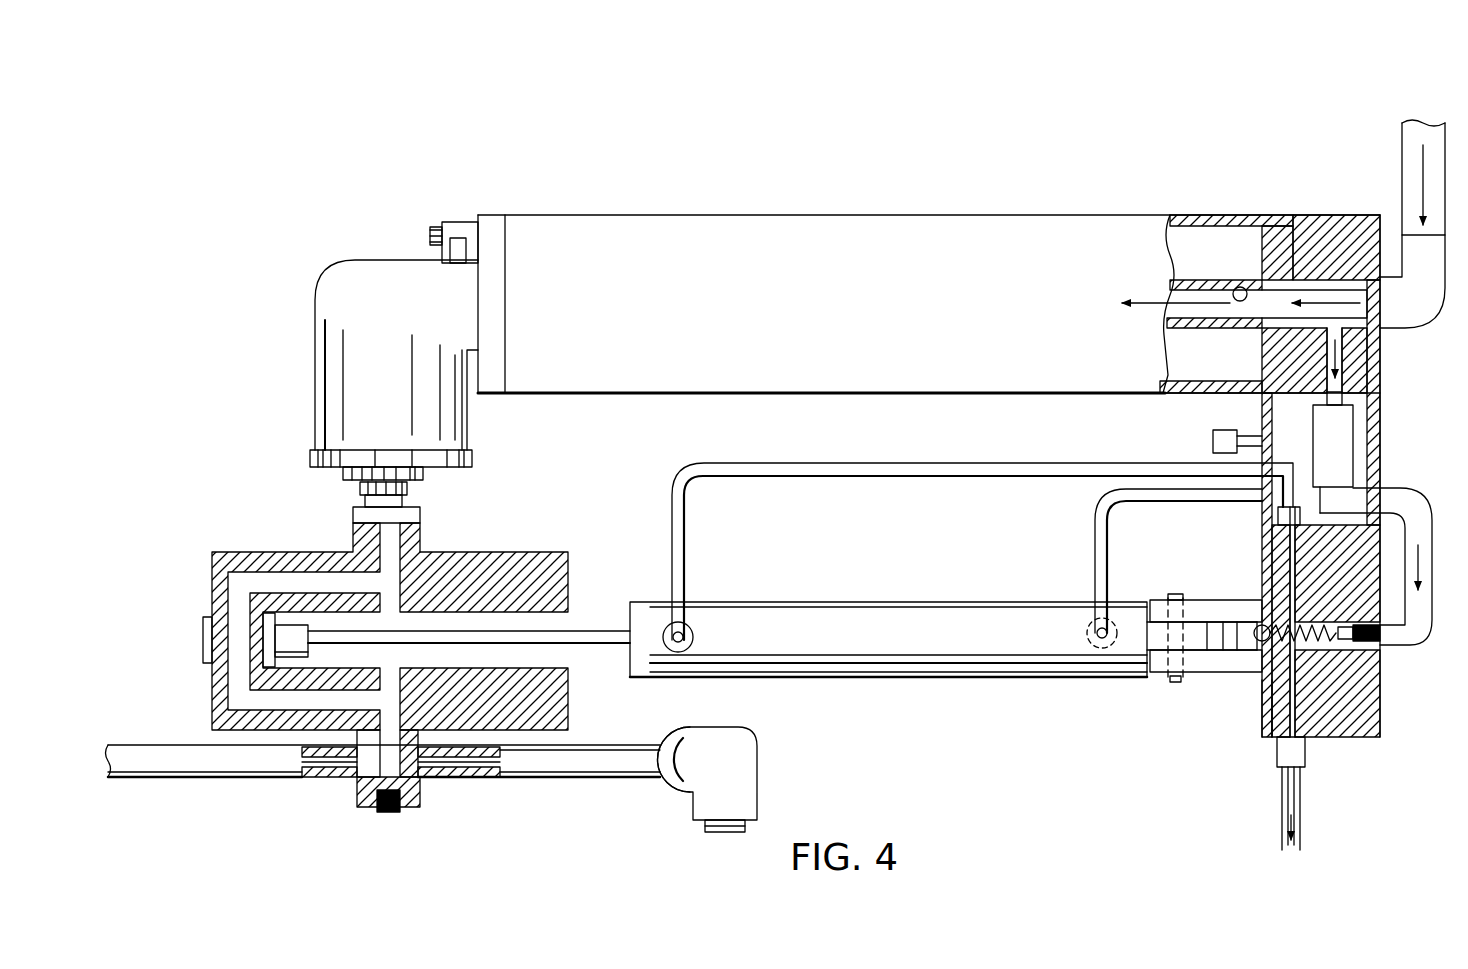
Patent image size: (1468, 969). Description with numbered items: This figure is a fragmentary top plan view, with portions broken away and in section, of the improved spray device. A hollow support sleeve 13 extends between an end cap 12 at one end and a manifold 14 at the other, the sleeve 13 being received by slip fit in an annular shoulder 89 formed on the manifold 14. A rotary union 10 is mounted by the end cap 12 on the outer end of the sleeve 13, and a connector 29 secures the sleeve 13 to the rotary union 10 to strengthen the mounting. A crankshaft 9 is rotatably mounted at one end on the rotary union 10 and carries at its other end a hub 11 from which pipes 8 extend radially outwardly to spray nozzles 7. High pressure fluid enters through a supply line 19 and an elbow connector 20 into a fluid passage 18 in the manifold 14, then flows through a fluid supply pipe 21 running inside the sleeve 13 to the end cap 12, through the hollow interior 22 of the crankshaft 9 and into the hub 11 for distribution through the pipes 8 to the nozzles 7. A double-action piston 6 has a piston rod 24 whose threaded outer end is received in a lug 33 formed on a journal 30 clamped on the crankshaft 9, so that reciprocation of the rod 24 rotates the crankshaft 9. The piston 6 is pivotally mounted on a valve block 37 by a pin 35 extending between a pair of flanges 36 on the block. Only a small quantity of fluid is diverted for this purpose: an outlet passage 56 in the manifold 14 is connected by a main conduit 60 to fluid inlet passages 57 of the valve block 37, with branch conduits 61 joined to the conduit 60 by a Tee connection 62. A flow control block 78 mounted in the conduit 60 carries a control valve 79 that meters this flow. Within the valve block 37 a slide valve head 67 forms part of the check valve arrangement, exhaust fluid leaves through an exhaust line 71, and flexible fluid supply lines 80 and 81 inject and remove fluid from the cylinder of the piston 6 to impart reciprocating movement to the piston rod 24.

The double-action piston 6 is at (884, 680).
The spray nozzle 7 is at (722, 830).
The pipe 8 is at (577, 762).
The crankshaft 9 is at (225, 550).
The rotary union 10 is at (326, 343).
The hub 11 is at (365, 790).
The end cap 12 is at (497, 222).
The hollow support sleeve 13 is at (688, 238).
The manifold 14 is at (1328, 225).
The fluid passage 18 is at (1237, 288).
The high pressure fluid supply line 19 is at (1405, 153).
The elbow connector 20 is at (1420, 315).
The fluid supply pipe 21 is at (1205, 290).
The hollow interior 22 is at (277, 703).
The piston rod 24 is at (597, 635).
The connector 29 is at (457, 222).
The journal 30 is at (200, 617).
The lug 33 is at (291, 640).
The pin 35 is at (1170, 680).
The flange 36 is at (1215, 608).
The valve block 37 is at (1258, 700).
The outlet passage 56 is at (1340, 352).
The fluid inlet passage 57 is at (1380, 688).
The main conduit 60 is at (1425, 490).
The branch conduit 61 is at (1400, 646).
The Tee connection 62 is at (1395, 631).
The slide valve head 67 is at (1290, 710).
The fluid exhaust line 71 is at (1290, 800).
The flow control block 78 is at (1330, 437).
The control valve 79 is at (1220, 440).
The flexible fluid supply line 80 is at (935, 470).
The flexible fluid supply line 81 is at (1200, 500).
The annular shoulder 89 is at (1287, 215).